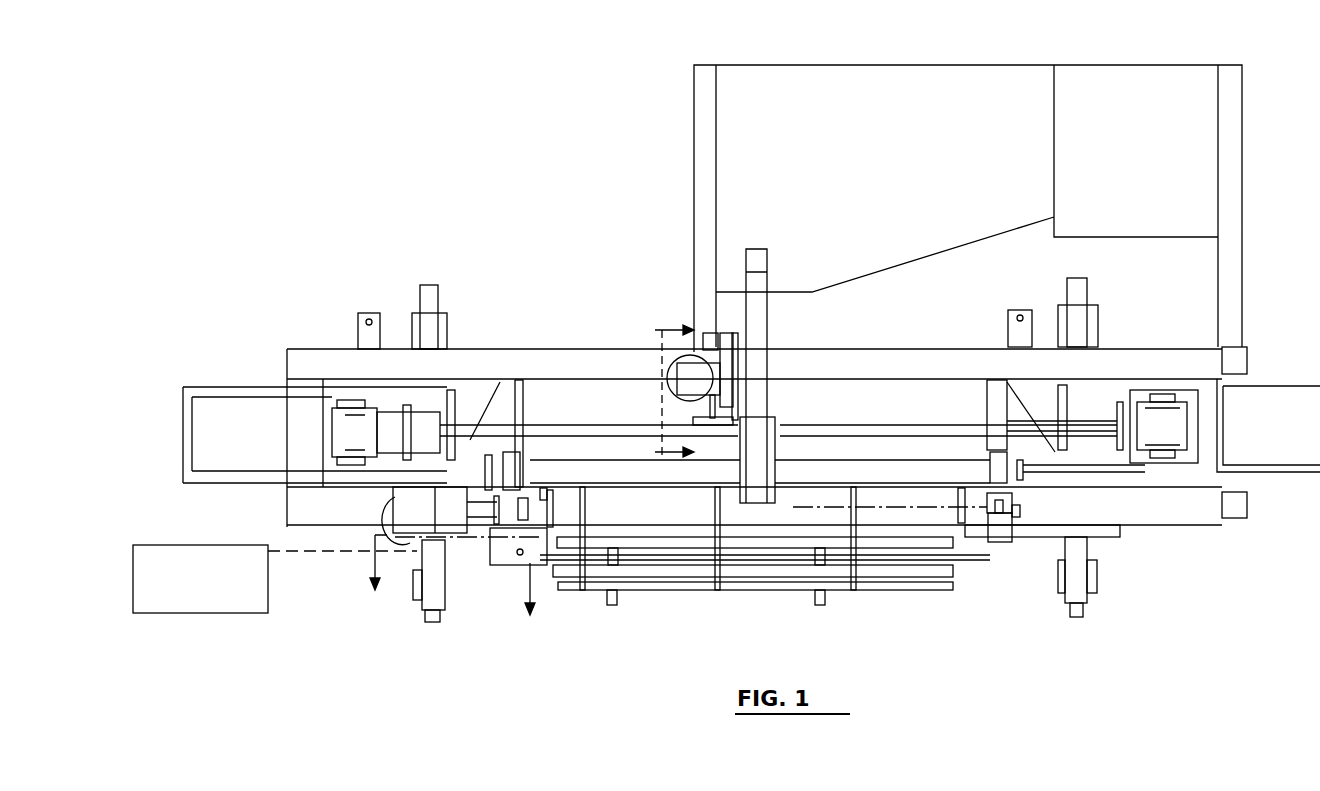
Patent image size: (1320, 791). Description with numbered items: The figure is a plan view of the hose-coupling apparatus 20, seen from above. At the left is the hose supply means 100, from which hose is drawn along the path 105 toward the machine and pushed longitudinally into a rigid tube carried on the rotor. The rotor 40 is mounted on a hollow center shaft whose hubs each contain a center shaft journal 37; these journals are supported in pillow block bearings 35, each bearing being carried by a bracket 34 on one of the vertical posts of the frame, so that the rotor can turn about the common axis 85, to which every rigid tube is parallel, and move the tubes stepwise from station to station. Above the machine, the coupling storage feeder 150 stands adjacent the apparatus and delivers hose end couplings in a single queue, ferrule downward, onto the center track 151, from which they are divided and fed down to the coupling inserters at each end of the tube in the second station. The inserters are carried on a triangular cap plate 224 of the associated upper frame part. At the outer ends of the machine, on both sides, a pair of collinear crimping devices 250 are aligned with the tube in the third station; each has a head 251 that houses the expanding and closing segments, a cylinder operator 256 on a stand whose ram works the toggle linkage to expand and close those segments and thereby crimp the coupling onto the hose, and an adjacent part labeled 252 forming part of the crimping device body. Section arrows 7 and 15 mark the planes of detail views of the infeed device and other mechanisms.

The coupling storage feeder 150 is at (732, 158).
The center track 151 is at (760, 322).
The crimping device 250 is at (332, 432).
The motor housing 252 is at (348, 437).
The cylinder operator 256 is at (408, 432).
The head 251 is at (472, 410).
The triangular cap plate 224 is at (503, 398).
The apparatus 20 is at (648, 600).
The rotor 40 is at (753, 593).
The common axis 85 is at (897, 508).
The center shaft journal 37 is at (495, 509).
The pillow block bearing 35 is at (528, 509).
The bracket 34 is at (540, 488).
The supply means 100 is at (215, 610).
The path of the hose 105 is at (330, 553).
The section line 7 is at (452, 587).
The section line 15 is at (657, 392).